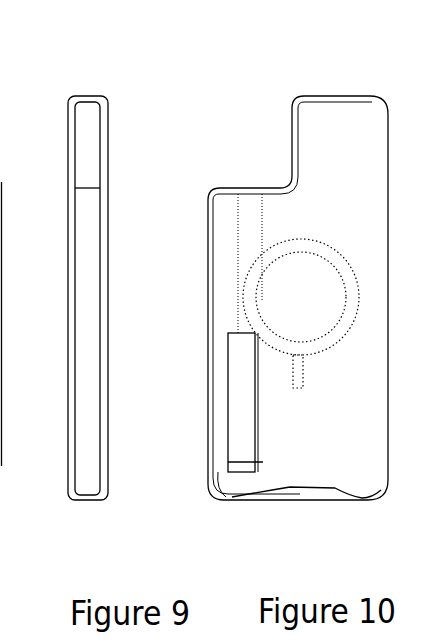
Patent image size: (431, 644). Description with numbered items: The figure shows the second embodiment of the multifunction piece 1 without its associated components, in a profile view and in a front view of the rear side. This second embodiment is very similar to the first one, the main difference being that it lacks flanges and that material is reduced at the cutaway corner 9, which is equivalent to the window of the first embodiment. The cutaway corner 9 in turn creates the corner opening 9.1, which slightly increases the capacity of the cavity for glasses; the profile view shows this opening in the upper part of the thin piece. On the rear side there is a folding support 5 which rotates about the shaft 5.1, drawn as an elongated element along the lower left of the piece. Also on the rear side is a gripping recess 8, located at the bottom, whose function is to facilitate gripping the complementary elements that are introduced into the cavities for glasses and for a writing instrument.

In FIG. 9, the multifunction piece 1 is at (69, 97).
In FIG. 10, the multifunction piece 1 is at (209, 275).
In FIG. 9, the corner opening 9.1 is at (92, 176).
In FIG. 10, the cutaway corner 9 is at (261, 148).
In FIG. 10, the folding support 5 is at (242, 378).
In FIG. 10, the shaft 5.1 is at (224, 473).
In FIG. 10, the gripping recess 8 is at (292, 489).